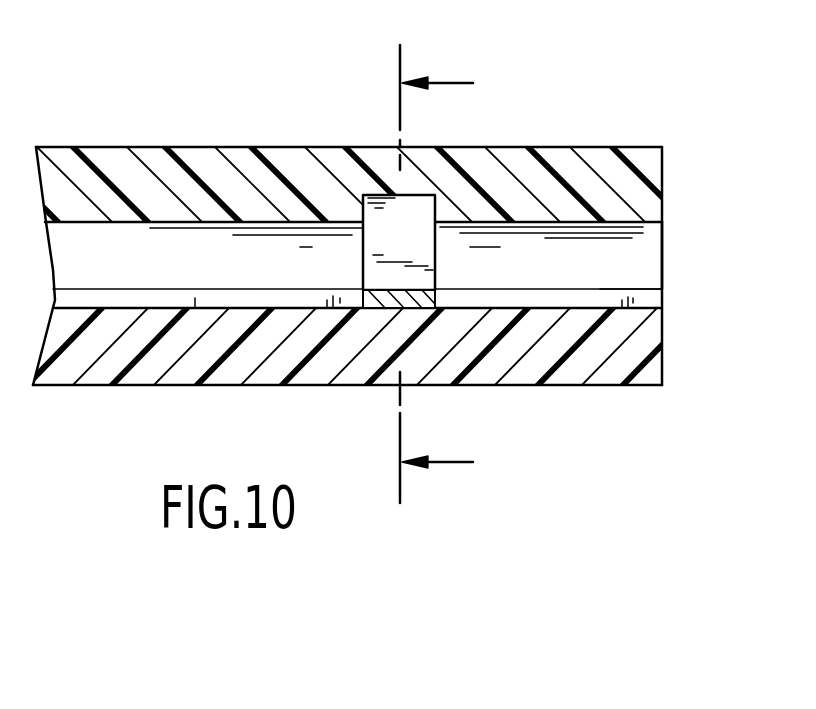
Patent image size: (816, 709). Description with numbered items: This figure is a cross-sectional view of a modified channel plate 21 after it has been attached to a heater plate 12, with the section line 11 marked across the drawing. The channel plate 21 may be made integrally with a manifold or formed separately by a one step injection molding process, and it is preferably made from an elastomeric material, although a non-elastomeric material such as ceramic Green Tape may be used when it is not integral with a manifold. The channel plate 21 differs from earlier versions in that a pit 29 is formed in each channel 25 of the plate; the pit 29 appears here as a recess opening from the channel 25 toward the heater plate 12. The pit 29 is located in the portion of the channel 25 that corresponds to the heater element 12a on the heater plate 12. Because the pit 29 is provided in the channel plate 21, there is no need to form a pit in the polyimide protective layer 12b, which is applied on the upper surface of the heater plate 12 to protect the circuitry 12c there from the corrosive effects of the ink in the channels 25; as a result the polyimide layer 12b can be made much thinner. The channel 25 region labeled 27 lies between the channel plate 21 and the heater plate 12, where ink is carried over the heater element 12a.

The section line 11- 11 is at (436, 274).
The heater plate 12 is at (612, 363).
The heater element 12a is at (408, 300).
The polyimide protective layer 12b is at (642, 300).
The circuitry 12c is at (195, 297).
The channel plate 21 is at (262, 188).
The channel 25 is at (165, 257).
The ink channel 27 is at (663, 273).
The pit 29 is at (370, 212).